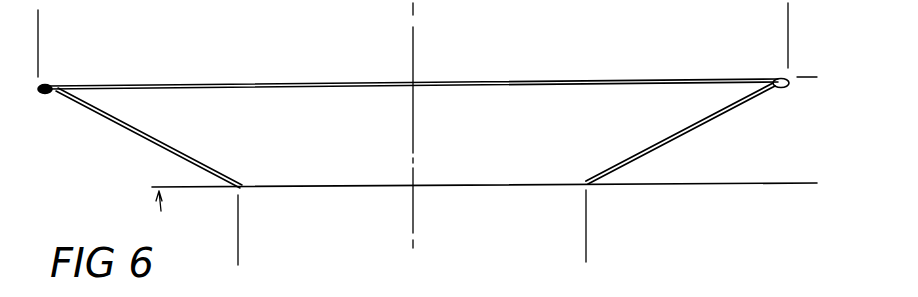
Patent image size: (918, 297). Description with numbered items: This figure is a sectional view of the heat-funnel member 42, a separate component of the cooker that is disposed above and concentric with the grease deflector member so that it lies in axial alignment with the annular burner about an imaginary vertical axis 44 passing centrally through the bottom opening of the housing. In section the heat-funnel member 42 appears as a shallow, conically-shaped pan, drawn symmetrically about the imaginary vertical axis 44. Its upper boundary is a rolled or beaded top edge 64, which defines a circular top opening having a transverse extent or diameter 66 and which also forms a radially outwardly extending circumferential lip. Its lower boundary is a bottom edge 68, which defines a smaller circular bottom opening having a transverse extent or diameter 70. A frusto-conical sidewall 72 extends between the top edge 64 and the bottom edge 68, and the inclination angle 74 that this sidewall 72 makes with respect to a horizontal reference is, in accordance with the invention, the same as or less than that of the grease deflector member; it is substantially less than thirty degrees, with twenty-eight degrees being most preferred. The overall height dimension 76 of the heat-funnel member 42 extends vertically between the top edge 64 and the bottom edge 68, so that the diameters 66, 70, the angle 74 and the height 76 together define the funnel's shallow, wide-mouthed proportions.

The heat-funnel member 42 is at (427, 138).
The imaginary vertical axis 44 is at (413, 115).
The top edge 64 is at (40, 84).
The diameter 66 is at (786, 20).
The bottom edge 68 is at (371, 187).
The diameter 70 is at (240, 258).
The frusto-conical sidewall 72 is at (149, 138).
The inclination angle 74 is at (182, 143).
The height dimension 76 is at (808, 78).